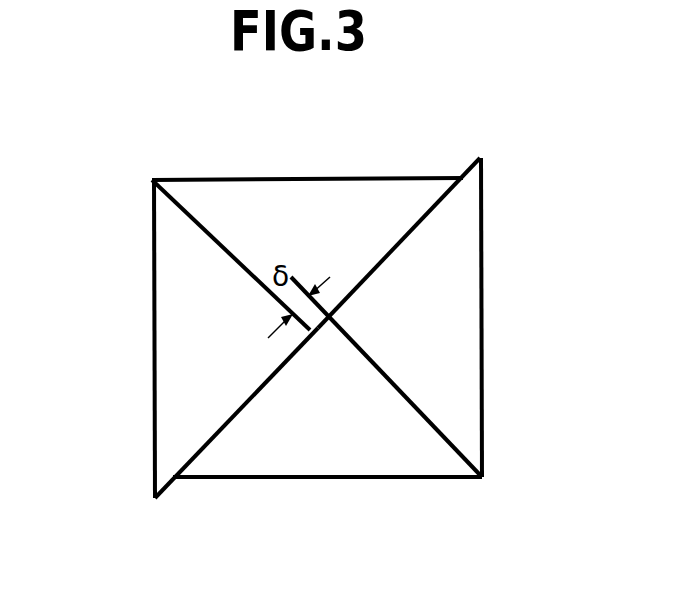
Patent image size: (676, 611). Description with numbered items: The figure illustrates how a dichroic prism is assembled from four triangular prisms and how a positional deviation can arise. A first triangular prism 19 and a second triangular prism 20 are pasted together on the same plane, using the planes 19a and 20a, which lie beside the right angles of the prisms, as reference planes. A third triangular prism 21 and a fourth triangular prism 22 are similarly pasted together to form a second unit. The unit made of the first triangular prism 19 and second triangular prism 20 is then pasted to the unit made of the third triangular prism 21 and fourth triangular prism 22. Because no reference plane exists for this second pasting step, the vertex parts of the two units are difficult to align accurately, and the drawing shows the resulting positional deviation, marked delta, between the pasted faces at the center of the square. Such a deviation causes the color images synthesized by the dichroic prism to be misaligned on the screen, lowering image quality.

The first triangular prism 19 is at (258, 198).
The reference plane of the first triangular prism 19a is at (397, 245).
The second triangular prism 20 is at (183, 317).
The reference plane of the second triangular prism 20a is at (232, 413).
The third triangular prism 21 is at (427, 327).
The fourth triangular prism 22 is at (285, 452).